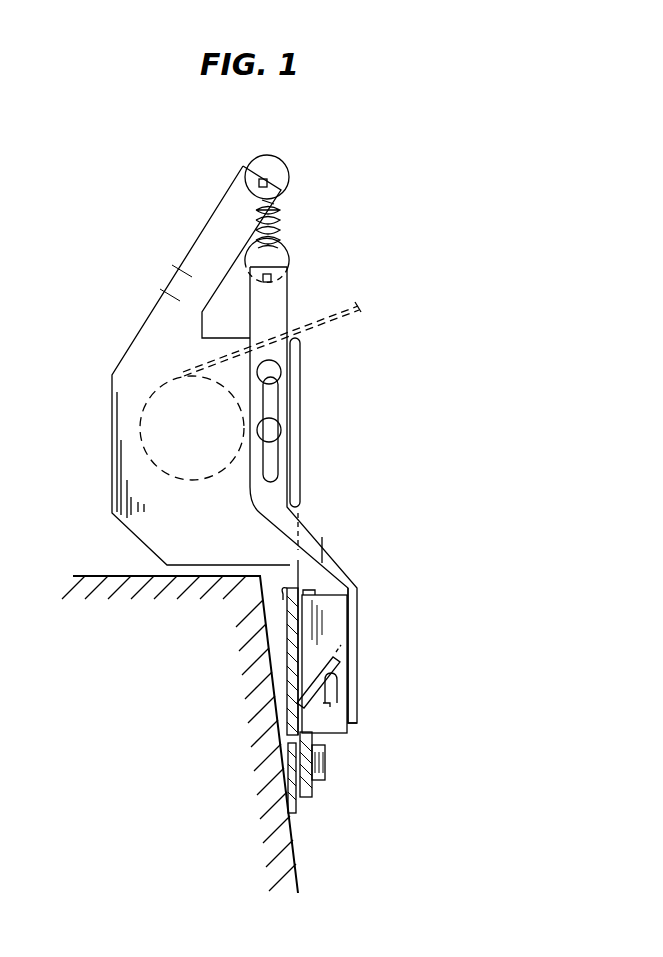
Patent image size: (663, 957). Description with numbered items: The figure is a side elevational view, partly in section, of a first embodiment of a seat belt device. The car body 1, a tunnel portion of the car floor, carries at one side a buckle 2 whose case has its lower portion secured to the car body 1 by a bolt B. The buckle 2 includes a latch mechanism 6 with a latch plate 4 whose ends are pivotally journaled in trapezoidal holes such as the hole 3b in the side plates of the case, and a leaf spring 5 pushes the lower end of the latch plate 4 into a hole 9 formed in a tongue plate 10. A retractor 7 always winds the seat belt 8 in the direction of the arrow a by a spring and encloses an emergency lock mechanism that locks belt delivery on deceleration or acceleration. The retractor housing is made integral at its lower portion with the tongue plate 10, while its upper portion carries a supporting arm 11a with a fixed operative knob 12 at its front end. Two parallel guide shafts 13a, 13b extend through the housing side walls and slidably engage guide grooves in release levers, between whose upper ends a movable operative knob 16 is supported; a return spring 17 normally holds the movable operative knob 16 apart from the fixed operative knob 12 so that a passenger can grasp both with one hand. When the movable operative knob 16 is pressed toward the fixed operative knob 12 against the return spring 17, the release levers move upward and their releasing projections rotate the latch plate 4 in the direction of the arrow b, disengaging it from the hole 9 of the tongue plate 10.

The car body 1 is at (300, 861).
The buckle 2 is at (345, 735).
The trapezoidal hole 3b is at (340, 668).
The latch plate 4 is at (345, 650).
The leaf spring 5 is at (338, 690).
The latch mechanism 6 is at (357, 725).
The retractor 7 is at (142, 450).
The seat belt 8 is at (334, 318).
The hole 9 is at (288, 698).
The tongue plate 10 is at (288, 732).
The supporting arm 11a is at (212, 215).
The fixed operative knob 12 is at (290, 168).
The guide shaft 13a is at (281, 432).
The guide shaft 13b is at (276, 378).
The movable operative knob 16 is at (288, 262).
The return spring 17 is at (282, 217).
The arrow a is at (343, 295).
The arrow b is at (287, 648).
The bolt B is at (319, 782).